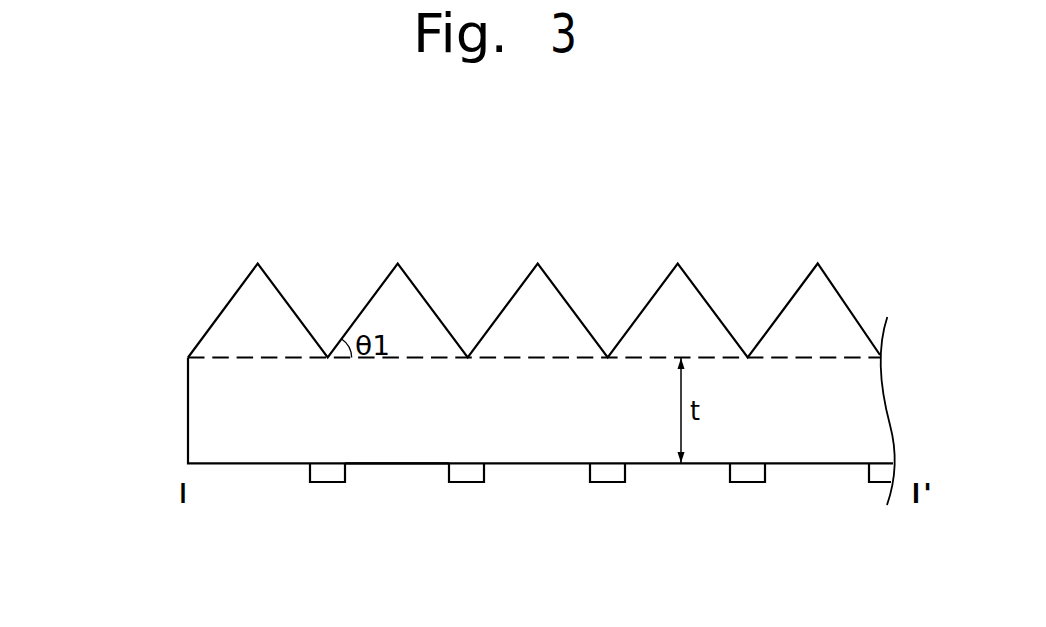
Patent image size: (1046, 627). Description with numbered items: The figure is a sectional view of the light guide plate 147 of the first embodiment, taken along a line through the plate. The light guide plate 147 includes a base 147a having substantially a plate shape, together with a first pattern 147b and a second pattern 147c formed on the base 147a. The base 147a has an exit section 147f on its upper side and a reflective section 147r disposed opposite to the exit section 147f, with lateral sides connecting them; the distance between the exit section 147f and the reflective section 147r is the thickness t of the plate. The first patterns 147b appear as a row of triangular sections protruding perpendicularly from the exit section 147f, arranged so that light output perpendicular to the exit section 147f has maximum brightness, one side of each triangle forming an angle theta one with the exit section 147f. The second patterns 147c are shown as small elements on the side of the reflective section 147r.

The light guide plate 147 is at (480, 376).
The base 147a is at (200, 415).
The first pattern 147b is at (247, 323).
The second pattern 147c is at (325, 475).
The exit section 147f is at (433, 357).
The reflective section 147r is at (395, 465).